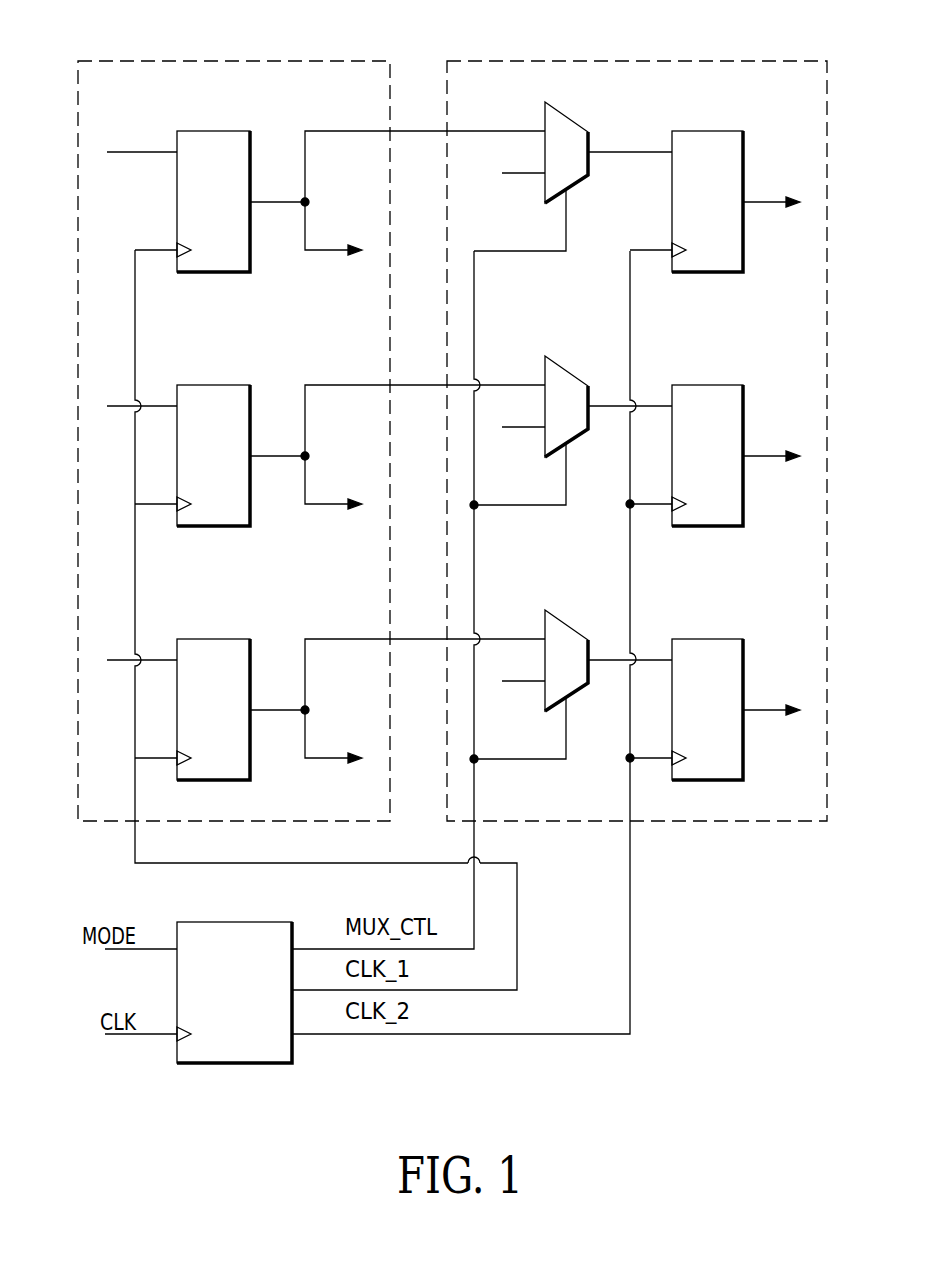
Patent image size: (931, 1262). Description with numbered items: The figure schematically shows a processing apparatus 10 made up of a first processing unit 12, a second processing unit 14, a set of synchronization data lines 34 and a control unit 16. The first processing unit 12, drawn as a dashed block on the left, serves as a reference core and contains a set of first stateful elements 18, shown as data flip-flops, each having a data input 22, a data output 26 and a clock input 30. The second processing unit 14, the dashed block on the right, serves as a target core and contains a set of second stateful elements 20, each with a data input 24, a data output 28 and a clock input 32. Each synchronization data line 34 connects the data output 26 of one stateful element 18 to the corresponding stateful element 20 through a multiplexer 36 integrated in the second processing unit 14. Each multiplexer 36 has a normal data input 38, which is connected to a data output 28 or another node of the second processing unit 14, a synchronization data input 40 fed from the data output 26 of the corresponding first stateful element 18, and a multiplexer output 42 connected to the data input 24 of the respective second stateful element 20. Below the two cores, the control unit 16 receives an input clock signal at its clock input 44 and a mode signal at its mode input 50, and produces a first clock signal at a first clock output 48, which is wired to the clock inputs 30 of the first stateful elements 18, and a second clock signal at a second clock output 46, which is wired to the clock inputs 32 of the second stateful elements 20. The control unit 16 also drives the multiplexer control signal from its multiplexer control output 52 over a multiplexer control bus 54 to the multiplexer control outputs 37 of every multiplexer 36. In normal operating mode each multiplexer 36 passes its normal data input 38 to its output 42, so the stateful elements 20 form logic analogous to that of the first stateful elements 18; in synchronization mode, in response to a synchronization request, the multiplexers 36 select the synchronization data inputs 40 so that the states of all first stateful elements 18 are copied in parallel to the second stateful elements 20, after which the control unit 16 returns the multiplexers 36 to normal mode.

The processing apparatus 10 is at (545, 1118).
The first processing unit 12 is at (212, 62).
The second processing unit 14 is at (636, 62).
The control unit 16 is at (250, 922).
The first stateful element 18 is at (205, 273).
The second stateful element 20 is at (700, 274).
The data input 22 is at (177, 153).
The data input 24 is at (670, 155).
The data output 26 is at (250, 203).
The data output 28 is at (746, 205).
The clock input 30 is at (177, 250).
The clock input 32 is at (671, 250).
The synchronization data line 34 is at (408, 133).
The multiplexer 36 is at (572, 110).
The multiplexer control output 37 is at (571, 194).
The normal data input 38 is at (541, 178).
The synchronization data input 40 is at (543, 130).
The multiplexer output 42 is at (592, 149).
The clock input 44 is at (177, 1034).
The second clock output 46 is at (293, 1032).
The first clock output 48 is at (293, 988).
The mode input 50 is at (177, 949).
The multiplexer control output 52 is at (293, 947).
The multiplexer control bus 54 is at (478, 837).